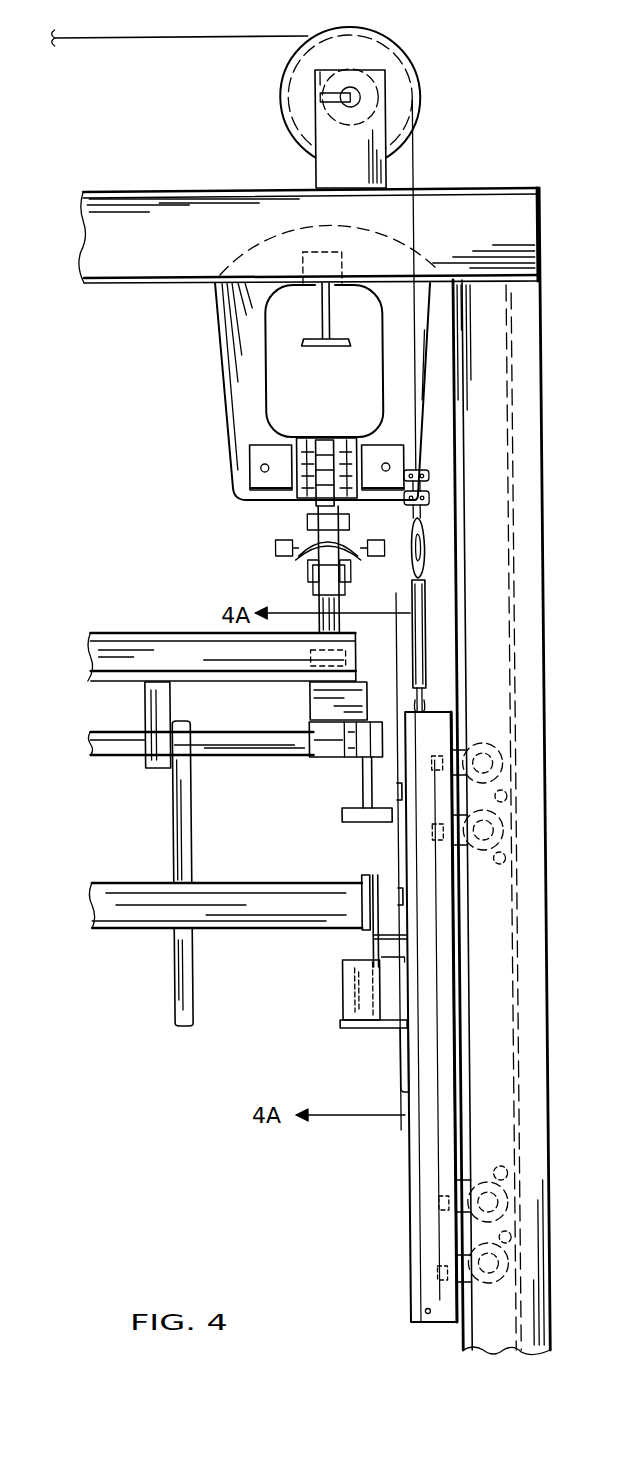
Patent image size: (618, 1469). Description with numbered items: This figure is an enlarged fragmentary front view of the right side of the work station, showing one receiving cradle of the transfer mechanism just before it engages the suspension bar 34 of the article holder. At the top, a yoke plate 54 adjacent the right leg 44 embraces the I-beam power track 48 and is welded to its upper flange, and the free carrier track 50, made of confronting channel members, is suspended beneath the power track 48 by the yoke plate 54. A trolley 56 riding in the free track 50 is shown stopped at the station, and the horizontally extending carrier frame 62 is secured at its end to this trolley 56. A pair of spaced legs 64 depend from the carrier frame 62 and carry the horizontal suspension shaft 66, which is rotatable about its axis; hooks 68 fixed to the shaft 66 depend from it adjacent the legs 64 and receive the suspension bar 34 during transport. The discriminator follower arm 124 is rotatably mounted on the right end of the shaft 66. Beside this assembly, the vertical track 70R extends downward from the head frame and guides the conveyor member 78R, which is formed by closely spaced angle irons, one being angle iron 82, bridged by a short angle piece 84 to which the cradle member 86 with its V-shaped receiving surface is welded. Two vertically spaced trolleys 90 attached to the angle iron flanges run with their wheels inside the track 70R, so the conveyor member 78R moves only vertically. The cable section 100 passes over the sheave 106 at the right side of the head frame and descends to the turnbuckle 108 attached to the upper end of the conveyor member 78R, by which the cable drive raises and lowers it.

The suspension bar 34 is at (119, 930).
The vertical leg 44 is at (528, 771).
The I-beam power track 48 is at (308, 346).
The free carrier track 50 is at (318, 405).
The yoke plate 54 is at (218, 376).
The trolley 56 is at (300, 478).
The carrier frame 62 is at (159, 631).
The leg 64 is at (141, 715).
The suspension shaft 66 is at (117, 758).
The hook 68 is at (170, 860).
The vertical track 70R is at (512, 430).
The conveyor member 78R is at (436, 1014).
The angle iron 82 is at (401, 1285).
The angle piece 84 is at (396, 1060).
The cradle member 86 is at (341, 1004).
The trolley 90 is at (475, 742).
The cable section 100 is at (150, 38).
The sheave 106 is at (414, 77).
The turnbuckle 108 is at (409, 593).
The discriminator follower arm 124 is at (340, 778).